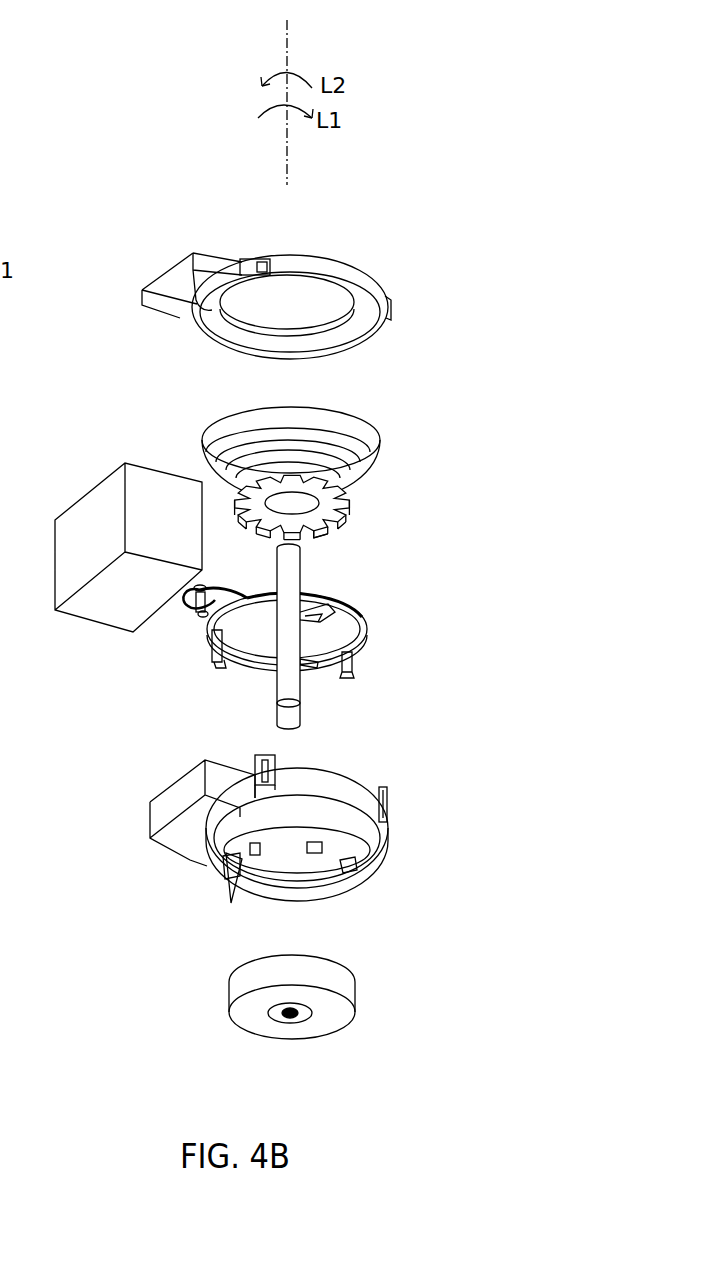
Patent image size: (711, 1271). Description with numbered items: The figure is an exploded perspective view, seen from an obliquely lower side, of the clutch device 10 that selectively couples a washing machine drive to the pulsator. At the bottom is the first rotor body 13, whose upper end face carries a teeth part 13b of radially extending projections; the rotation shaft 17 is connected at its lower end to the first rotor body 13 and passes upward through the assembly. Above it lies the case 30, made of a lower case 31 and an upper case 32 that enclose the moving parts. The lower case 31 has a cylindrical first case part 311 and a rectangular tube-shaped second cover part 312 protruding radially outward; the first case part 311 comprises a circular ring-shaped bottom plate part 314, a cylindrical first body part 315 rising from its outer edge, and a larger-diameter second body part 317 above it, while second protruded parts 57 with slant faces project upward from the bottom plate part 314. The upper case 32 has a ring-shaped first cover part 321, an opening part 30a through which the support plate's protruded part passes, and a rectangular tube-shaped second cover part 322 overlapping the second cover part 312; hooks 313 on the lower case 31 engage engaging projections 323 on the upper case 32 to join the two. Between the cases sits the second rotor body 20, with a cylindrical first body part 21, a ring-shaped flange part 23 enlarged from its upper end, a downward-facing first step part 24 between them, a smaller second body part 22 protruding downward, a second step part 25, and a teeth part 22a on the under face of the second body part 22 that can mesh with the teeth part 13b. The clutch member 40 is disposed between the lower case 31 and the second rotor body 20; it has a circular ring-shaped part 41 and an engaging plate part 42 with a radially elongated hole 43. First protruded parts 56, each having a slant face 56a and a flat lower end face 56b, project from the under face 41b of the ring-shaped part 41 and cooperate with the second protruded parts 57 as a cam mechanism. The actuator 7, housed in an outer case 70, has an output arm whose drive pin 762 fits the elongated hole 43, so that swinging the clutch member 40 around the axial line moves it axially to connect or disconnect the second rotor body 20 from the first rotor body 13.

The clutch device 10 is at (356, 167).
The case 30 is at (272, 546).
The upper case 32 is at (219, 252).
The first cover part 321 is at (333, 268).
The second cover part 322 is at (173, 258).
The engaging projection 323 is at (262, 258).
The opening part 30a is at (348, 320).
The lower case 31 is at (173, 838).
The first case part 311 is at (357, 795).
The second cover part 312 is at (193, 818).
The hook 313 is at (275, 758).
The bottom plate part 314 is at (365, 870).
The first body part 315 is at (363, 832).
The second body part 317 is at (325, 782).
The second protruded part 57 is at (232, 890).
The second rotor body 20 is at (211, 419).
The first body part 21 is at (355, 467).
The second body part 22 is at (343, 491).
The teeth part 22a is at (312, 525).
The flange part 23 is at (368, 437).
The first step part 24 is at (362, 460).
The second step part 25 is at (350, 485).
The rotation shaft 17 is at (285, 643).
The clutch member 40 is at (264, 594).
The circular ring-shaped part 41 is at (252, 663).
The under face 41b is at (307, 667).
The engaging plate part 42 is at (217, 590).
The elongated hole 43 is at (190, 596).
The first protruded part 56 is at (218, 665).
The slant face 56a is at (325, 610).
The lower end face 56b is at (330, 624).
The actuator 7 is at (98, 512).
The outer case 70 is at (65, 537).
The drive pin 762 is at (203, 610).
The first rotor body 13 is at (340, 982).
The teeth part 13b is at (328, 985).